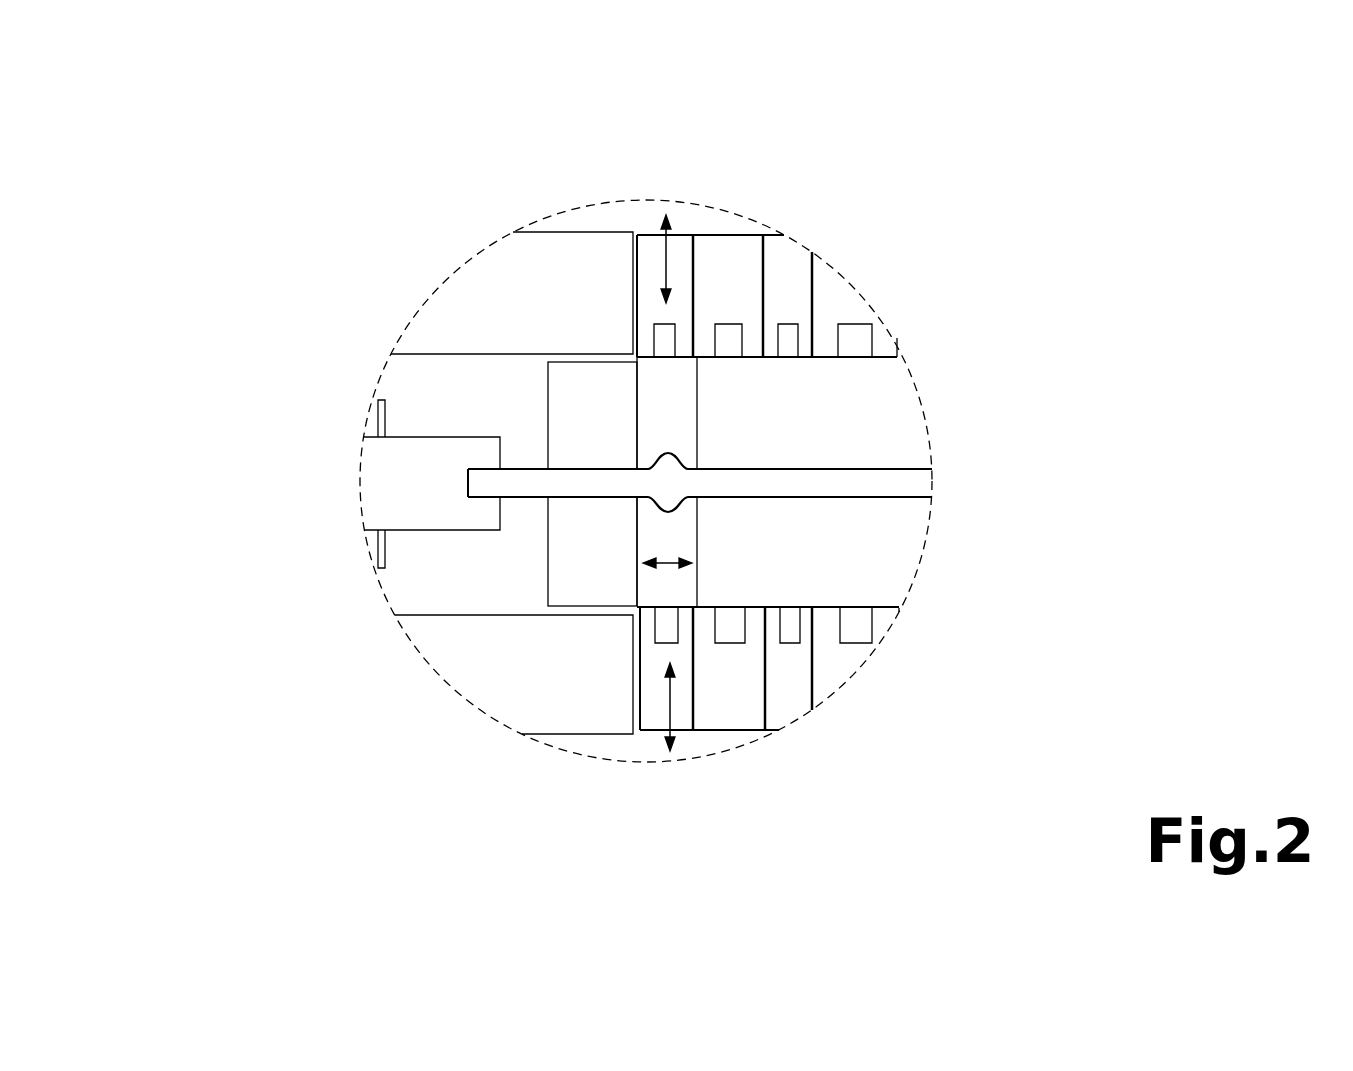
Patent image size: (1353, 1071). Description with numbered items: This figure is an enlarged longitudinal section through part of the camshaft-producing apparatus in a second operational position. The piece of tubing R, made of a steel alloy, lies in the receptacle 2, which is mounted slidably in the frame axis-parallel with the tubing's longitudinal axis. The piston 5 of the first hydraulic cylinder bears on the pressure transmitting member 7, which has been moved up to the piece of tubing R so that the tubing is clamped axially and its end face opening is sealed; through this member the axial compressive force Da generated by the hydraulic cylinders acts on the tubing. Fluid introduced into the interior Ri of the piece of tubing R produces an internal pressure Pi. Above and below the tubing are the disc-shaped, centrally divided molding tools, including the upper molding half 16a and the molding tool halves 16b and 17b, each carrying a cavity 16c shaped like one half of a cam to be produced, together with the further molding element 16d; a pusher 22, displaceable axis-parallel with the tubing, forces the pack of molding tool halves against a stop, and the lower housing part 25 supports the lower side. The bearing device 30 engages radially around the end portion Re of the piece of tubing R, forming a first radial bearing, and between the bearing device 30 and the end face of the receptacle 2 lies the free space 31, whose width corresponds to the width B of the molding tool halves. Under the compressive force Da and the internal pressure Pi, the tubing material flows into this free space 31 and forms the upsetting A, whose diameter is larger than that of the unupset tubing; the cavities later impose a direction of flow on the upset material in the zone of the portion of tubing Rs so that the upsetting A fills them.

The receptacle 2 is at (802, 405).
The piston 5 is at (423, 470).
The pressure transmitting member 7 is at (523, 488).
The upper molding half 16a is at (680, 307).
The molding tool half 16b is at (685, 678).
The cavity 16c is at (667, 343).
The fourth valve passage 16d is at (665, 632).
The molding tool half 17b is at (743, 717).
The pusher 22 is at (485, 308).
The lower housing part 25 is at (573, 713).
The bearing device 30 is at (582, 588).
The free space 31 is at (673, 402).
The upsetting A is at (677, 450).
The width B is at (673, 565).
The axial compressive force Da is at (398, 487).
The end portion Re is at (608, 485).
The interior Ri is at (840, 482).
The internal pressure Pi is at (748, 487).
The piece of tubing R is at (824, 497).
The portion of tubing Rs is at (673, 490).